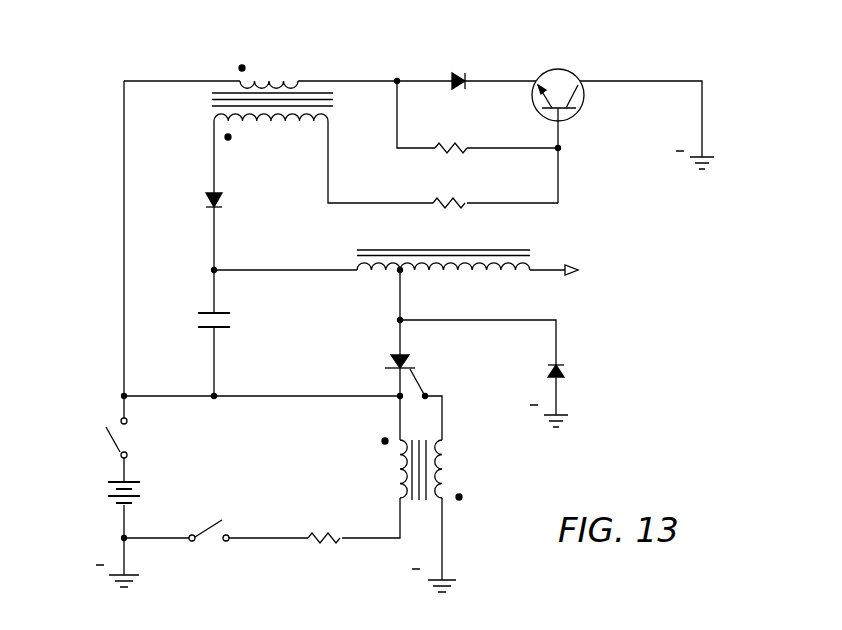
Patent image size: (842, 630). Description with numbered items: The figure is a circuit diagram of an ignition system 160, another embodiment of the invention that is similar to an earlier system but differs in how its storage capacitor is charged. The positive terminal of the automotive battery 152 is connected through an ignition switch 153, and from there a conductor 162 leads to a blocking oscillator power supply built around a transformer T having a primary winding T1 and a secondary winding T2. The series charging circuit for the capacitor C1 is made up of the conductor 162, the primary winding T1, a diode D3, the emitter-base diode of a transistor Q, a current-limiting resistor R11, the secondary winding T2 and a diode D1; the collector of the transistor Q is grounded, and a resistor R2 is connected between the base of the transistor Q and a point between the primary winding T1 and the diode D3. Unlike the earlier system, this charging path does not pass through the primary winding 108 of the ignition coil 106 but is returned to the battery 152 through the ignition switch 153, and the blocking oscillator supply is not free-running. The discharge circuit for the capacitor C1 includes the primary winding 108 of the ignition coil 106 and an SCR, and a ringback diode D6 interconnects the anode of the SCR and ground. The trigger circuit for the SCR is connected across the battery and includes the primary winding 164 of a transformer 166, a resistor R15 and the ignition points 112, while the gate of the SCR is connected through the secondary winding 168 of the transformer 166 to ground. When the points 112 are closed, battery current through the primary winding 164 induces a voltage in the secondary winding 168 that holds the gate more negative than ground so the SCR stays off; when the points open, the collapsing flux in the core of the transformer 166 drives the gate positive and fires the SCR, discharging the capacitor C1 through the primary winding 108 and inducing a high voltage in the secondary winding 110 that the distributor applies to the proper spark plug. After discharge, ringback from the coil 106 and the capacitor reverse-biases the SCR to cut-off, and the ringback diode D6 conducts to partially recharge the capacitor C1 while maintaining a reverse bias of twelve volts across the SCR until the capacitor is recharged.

The ignition system 160 is at (163, 33).
The conductor 162 is at (124, 214).
The primary winding T1 is at (294, 86).
The transformer core T is at (323, 92).
The secondary winding T2 is at (273, 118).
The diode D1 is at (222, 200).
The capacitor C1 is at (230, 322).
The diode D3 is at (449, 76).
The transistor Q is at (568, 72).
The resistor R2 is at (466, 144).
The current-limiting resistor R11 is at (467, 199).
The ignition coil 106 is at (511, 250).
The primary winding 108 is at (378, 270).
The secondary winding 110 is at (522, 270).
The element SCR is at (395, 358).
The ringback diode D6 is at (562, 369).
The primary winding 164 is at (398, 478).
The transformer 166 is at (415, 504).
The secondary winding 168 is at (443, 478).
The resistor R15 is at (342, 531).
The ignition switch 153 is at (110, 449).
The automotive battery 152 is at (133, 482).
The ignition points 112 is at (213, 522).